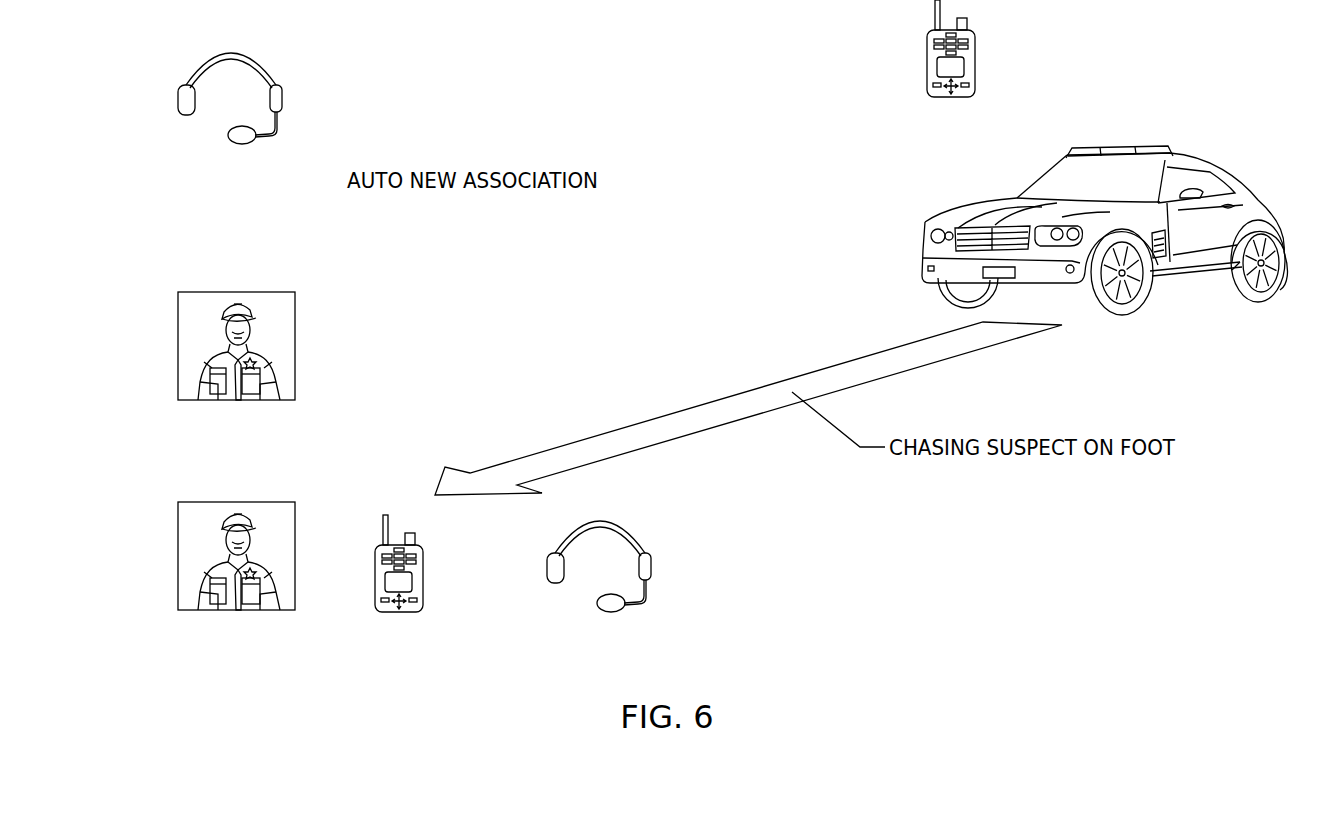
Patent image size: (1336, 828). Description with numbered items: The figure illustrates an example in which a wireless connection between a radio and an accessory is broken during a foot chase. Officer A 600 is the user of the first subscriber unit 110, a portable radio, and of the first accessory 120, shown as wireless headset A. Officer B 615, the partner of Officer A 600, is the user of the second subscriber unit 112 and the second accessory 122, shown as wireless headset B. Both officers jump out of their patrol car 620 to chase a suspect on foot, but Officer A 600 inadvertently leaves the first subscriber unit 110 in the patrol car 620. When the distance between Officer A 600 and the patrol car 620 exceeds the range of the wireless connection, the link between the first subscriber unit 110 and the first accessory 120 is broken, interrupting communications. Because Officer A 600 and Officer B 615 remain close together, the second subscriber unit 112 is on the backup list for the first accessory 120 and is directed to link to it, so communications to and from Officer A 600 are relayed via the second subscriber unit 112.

The first accessory 120 is at (178, 99).
The first subscriber unit 110 is at (927, 68).
The patrol car 620 is at (1048, 188).
The Officer A 600 is at (178, 347).
The Officer B 615 is at (178, 558).
The second subscriber unit 112 is at (375, 580).
The second accessory 122 is at (547, 563).